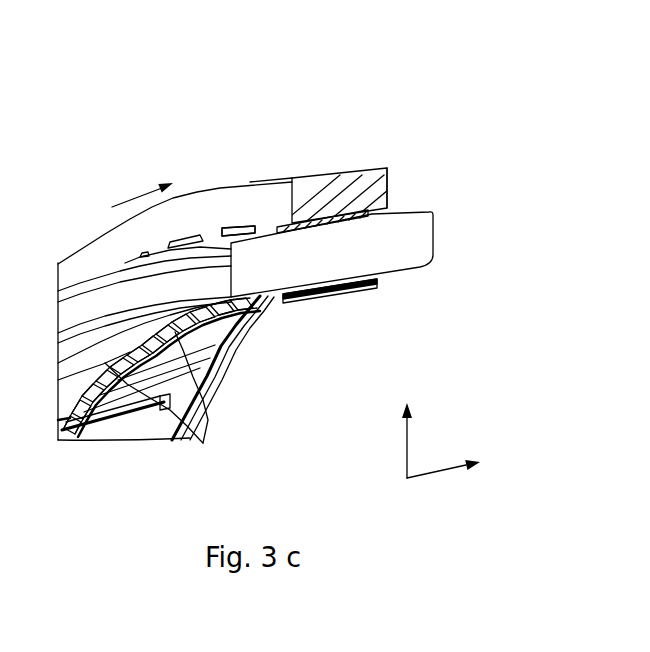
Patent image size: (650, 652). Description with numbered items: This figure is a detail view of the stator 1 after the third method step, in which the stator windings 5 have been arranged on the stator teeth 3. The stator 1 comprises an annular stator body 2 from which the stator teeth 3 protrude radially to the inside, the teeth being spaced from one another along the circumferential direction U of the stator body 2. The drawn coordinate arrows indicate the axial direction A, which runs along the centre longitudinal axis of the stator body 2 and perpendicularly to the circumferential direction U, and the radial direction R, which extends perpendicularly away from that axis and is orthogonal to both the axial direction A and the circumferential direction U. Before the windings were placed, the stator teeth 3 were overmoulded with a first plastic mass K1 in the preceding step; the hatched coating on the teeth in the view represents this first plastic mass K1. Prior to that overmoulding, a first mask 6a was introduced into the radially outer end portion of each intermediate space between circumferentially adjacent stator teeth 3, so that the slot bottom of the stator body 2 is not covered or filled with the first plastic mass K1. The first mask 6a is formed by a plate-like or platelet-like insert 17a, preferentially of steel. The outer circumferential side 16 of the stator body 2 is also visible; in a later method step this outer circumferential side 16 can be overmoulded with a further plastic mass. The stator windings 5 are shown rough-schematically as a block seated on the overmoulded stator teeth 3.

The stator 1 is at (450, 158).
The stator body 2 is at (386, 190).
The stator teeth 3 is at (110, 405).
The stator windings 5 is at (343, 266).
The first mask 6a is at (236, 227).
The insert 17a is at (276, 226).
The outer circumferential side 16 is at (340, 168).
The first plastic mass K1 is at (165, 403).
The circumferential direction U is at (132, 197).
The radial direction R is at (407, 445).
The axial direction A is at (437, 475).